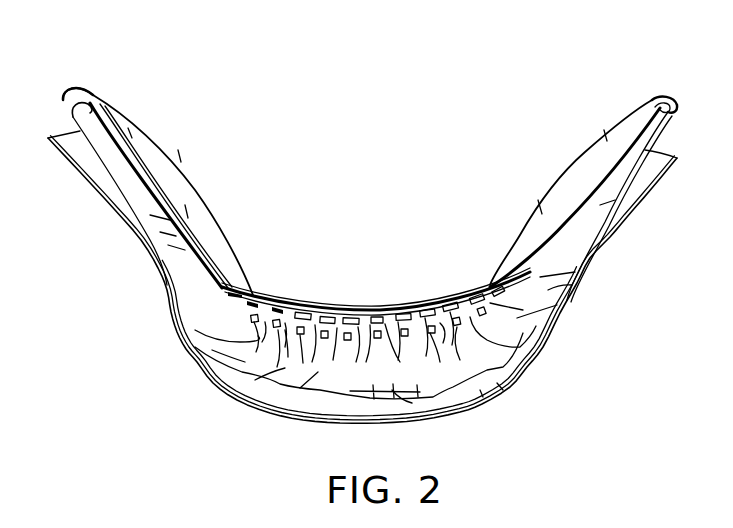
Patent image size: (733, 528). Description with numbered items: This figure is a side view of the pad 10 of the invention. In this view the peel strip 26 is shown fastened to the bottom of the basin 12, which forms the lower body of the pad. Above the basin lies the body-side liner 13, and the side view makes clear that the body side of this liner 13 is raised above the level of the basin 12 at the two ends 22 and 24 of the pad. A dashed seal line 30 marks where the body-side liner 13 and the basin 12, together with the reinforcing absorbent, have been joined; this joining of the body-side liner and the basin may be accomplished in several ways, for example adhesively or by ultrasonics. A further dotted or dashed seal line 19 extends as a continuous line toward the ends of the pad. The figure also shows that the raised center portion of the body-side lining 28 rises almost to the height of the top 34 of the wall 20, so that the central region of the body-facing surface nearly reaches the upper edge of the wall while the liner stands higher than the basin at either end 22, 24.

The pad 10 is at (266, 125).
The basin 12 is at (480, 396).
The body-side liner 13 is at (156, 156).
The dotted or dashed seal line 19 is at (303, 303).
The wall 20 is at (395, 308).
The end 22 is at (80, 88).
The end 24 is at (663, 100).
The peel strip 26 is at (93, 170).
The raised center portion of the body-side lining 28 is at (337, 303).
The dashed seal line 30 is at (457, 291).
The top 34 is at (417, 302).